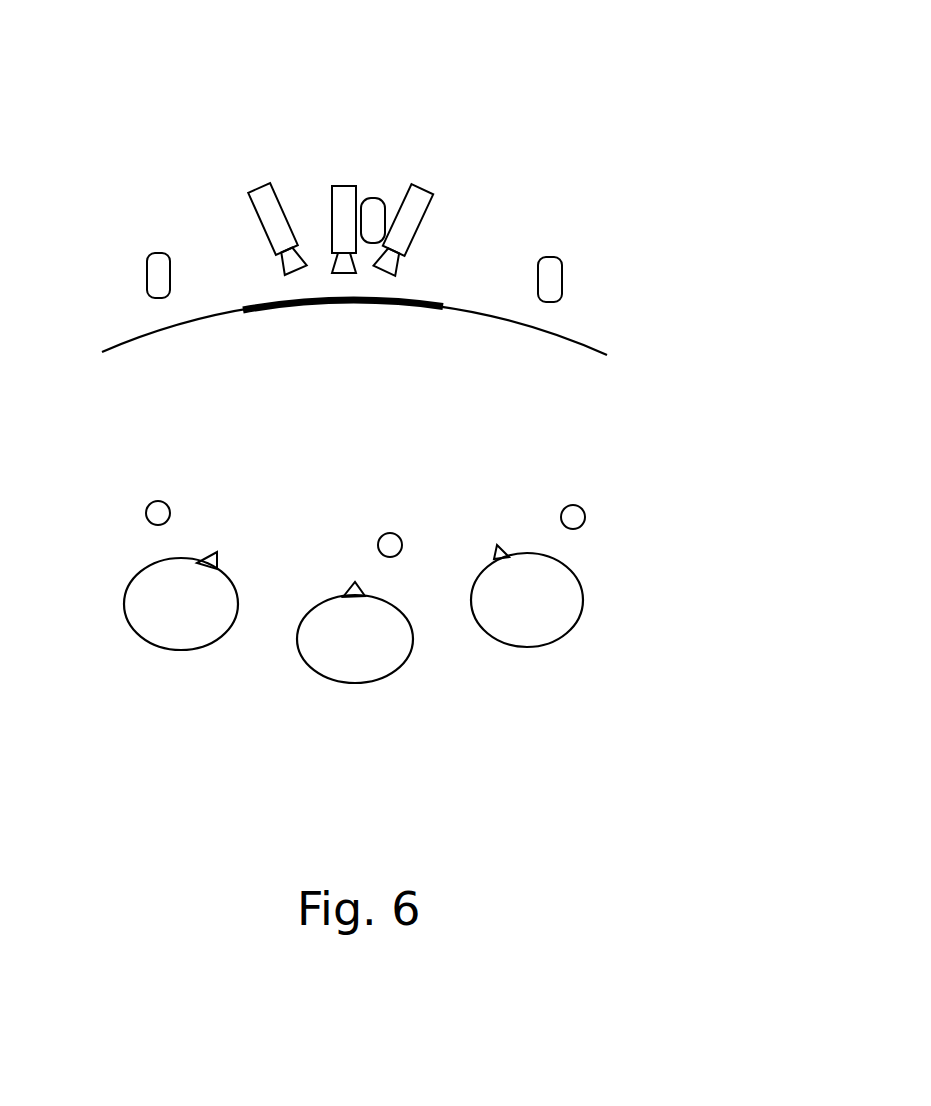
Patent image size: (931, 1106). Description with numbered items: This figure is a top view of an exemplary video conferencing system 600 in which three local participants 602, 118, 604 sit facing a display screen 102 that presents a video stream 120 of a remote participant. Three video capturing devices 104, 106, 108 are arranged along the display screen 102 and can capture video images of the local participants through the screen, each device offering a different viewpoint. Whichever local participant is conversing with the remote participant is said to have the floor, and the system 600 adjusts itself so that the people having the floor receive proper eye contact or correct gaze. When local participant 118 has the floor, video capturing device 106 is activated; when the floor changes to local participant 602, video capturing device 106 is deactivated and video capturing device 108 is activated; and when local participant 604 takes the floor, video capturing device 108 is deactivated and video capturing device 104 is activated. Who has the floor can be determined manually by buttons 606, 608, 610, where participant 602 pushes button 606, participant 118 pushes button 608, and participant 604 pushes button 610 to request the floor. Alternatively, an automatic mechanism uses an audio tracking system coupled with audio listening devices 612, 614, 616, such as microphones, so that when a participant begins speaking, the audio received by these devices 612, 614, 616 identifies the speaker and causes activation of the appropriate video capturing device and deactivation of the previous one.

The video conferencing system 600 is at (842, 48).
The display screen 102 is at (123, 337).
The video stream 120 is at (307, 311).
The video capturing device 104 is at (262, 187).
The video capturing device 106 is at (345, 183).
The video capturing device 108 is at (422, 182).
The audio listening device 612 is at (152, 252).
The audio listening device 614 is at (377, 197).
The audio listening device 616 is at (557, 257).
The button 606 is at (155, 501).
The button 608 is at (396, 536).
The button 610 is at (577, 506).
The local participant 602 is at (125, 602).
The local participant 118 is at (413, 640).
The local participant 604 is at (583, 598).